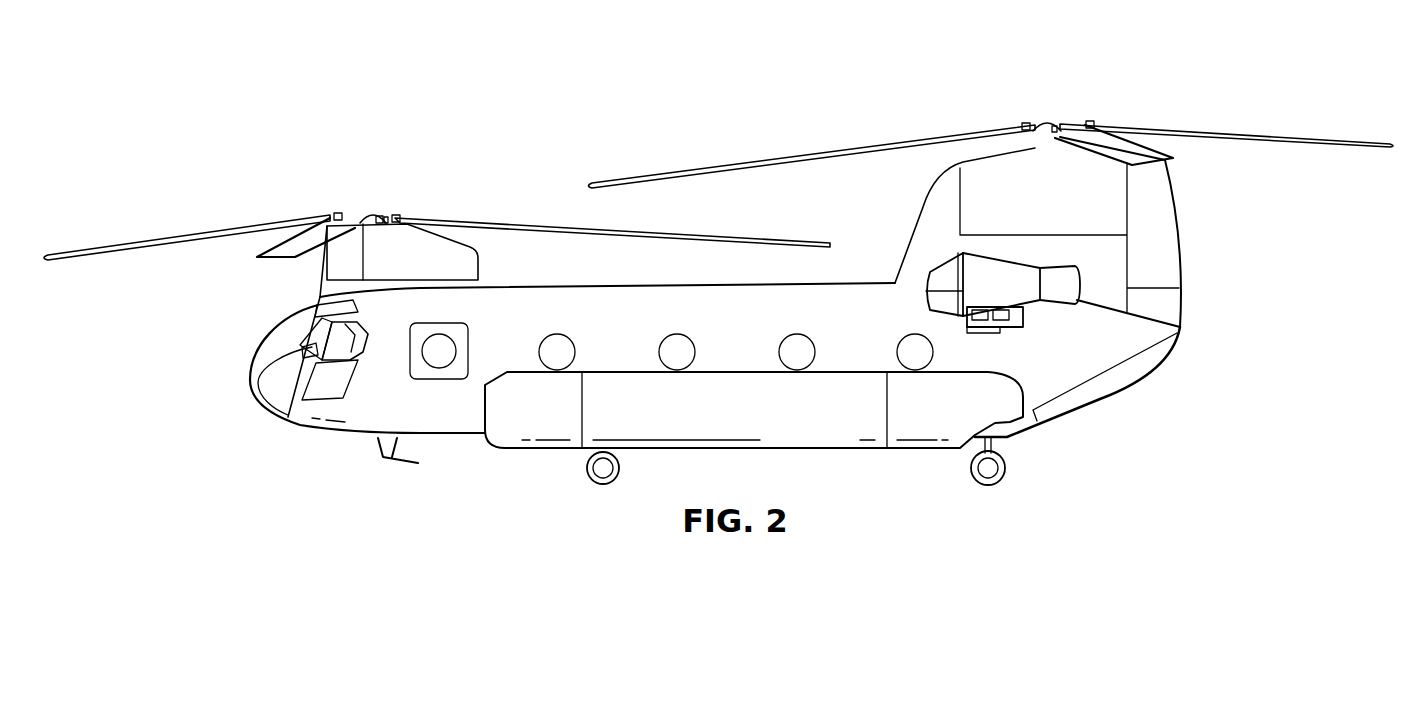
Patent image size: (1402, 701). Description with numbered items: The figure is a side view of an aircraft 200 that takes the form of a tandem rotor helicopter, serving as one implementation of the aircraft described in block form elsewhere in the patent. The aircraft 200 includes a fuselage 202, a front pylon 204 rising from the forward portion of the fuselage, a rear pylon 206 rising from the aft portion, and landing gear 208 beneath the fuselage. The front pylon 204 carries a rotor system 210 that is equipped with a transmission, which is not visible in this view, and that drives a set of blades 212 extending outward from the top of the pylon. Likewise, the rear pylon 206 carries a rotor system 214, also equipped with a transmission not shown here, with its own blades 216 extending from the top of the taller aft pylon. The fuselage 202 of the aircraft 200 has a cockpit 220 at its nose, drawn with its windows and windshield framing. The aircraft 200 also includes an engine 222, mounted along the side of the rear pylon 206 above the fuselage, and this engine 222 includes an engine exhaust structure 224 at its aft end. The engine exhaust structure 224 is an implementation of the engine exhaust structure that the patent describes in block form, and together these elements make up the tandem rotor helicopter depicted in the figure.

The aircraft 200 is at (436, 104).
The fuselage 202 is at (862, 293).
The front pylon 204 is at (442, 250).
The rear pylon 206 is at (987, 170).
The landing gear 208 is at (590, 468).
The rotor system 210 is at (294, 200).
The blades 212 is at (155, 240).
The rotor system 214 is at (1063, 96).
The blades 216 is at (1119, 148).
The cockpit 220 is at (340, 337).
The engine 222 is at (1031, 295).
The engine exhaust structure 224 is at (1057, 278).